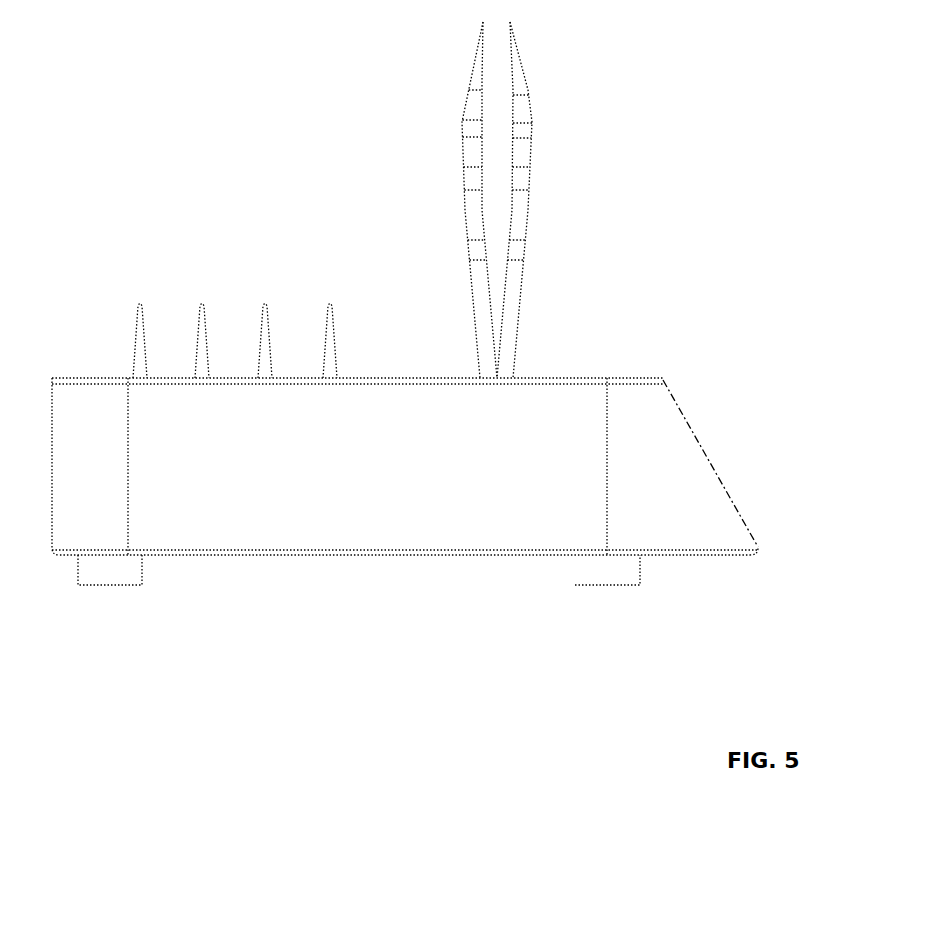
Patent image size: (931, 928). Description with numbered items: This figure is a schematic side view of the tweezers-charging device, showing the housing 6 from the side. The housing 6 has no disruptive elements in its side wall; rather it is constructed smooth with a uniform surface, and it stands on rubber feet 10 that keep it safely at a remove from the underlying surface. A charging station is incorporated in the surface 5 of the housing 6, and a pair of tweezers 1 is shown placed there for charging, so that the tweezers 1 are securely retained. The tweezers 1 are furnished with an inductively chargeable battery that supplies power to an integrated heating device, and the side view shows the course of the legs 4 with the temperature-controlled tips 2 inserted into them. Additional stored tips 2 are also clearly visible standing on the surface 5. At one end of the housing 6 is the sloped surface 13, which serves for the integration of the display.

The tweezers 1 is at (533, 137).
The tips 2 is at (137, 335).
The legs 4 is at (523, 253).
The surface 5 is at (432, 378).
The housing 6 is at (375, 481).
The rubber feet 10 is at (110, 587).
The surface 13 is at (707, 453).